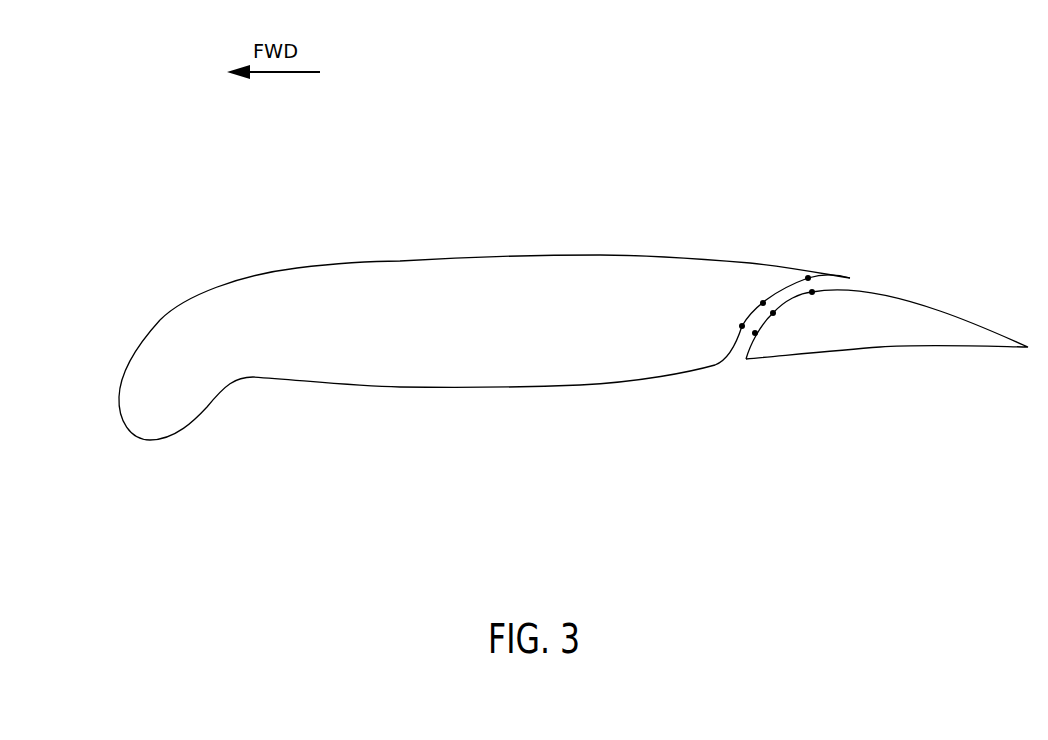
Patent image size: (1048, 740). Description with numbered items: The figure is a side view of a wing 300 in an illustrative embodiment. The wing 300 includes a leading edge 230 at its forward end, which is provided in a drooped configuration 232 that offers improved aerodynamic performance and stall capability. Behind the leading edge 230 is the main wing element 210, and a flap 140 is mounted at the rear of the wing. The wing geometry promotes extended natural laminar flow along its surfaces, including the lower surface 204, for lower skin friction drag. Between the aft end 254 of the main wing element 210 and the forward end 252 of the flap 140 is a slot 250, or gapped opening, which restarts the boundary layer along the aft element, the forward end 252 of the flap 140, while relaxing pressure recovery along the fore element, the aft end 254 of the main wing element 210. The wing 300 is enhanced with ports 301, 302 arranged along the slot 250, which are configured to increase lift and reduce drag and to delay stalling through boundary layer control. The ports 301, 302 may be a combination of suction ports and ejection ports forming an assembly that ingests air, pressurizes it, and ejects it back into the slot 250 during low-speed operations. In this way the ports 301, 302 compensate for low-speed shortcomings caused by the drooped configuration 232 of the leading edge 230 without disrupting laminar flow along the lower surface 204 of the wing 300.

The wing 300 is at (505, 188).
The main wing element 210 is at (357, 262).
The leading edge 230 is at (143, 308).
The drooped configuration 232 is at (125, 365).
The lower surface 204 is at (576, 375).
The aft end 254 is at (737, 332).
The slot 250 is at (850, 279).
The port 301 is at (808, 278).
The flap 140 is at (932, 302).
The forward end 252 is at (762, 358).
The port 302 is at (755, 333).